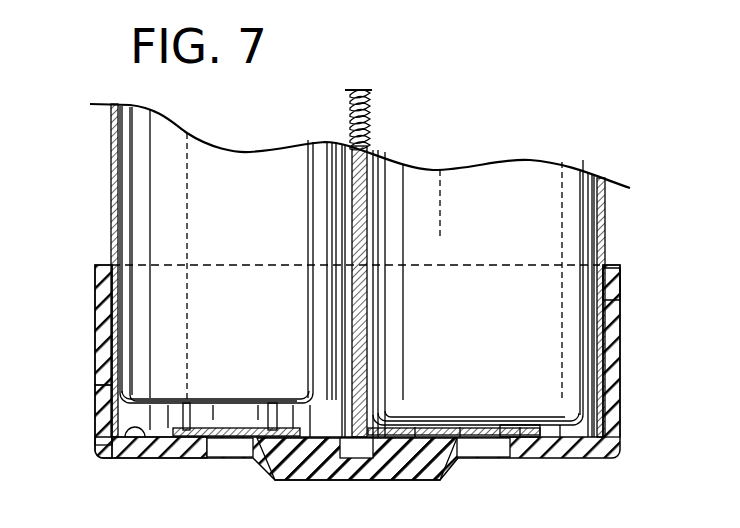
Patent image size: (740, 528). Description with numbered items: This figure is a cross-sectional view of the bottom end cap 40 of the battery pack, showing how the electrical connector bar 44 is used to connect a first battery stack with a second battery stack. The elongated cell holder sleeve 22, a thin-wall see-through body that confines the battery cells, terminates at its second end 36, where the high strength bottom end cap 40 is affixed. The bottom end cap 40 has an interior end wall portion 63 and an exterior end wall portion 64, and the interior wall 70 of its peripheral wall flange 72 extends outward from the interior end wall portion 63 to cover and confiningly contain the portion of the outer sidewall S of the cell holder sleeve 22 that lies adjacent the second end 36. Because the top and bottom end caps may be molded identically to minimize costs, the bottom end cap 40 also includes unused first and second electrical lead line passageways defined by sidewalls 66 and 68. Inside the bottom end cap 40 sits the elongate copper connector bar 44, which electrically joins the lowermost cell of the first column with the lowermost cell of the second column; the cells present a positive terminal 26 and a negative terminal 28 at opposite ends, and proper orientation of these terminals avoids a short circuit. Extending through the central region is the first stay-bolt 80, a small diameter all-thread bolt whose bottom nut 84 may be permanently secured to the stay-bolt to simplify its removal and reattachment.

The cell holder sleeve 22 is at (110, 190).
The positive terminal 26 is at (205, 422).
The negative terminal 28 is at (425, 430).
The second end 36 is at (592, 403).
The bottom end cap 40 is at (101, 399).
The connector bar 44 is at (517, 432).
The interior end wall portion 63 is at (112, 445).
The exterior end wall portion 64 is at (152, 457).
The sidewall 66 is at (465, 446).
The sidewall 68 is at (212, 448).
The interior wall 70 is at (99, 303).
The peripheral wall flange 72 is at (95, 293).
The first stay-bolt 80 is at (368, 133).
The bottom nut 84 is at (388, 455).
The outer sidewall S is at (605, 290).